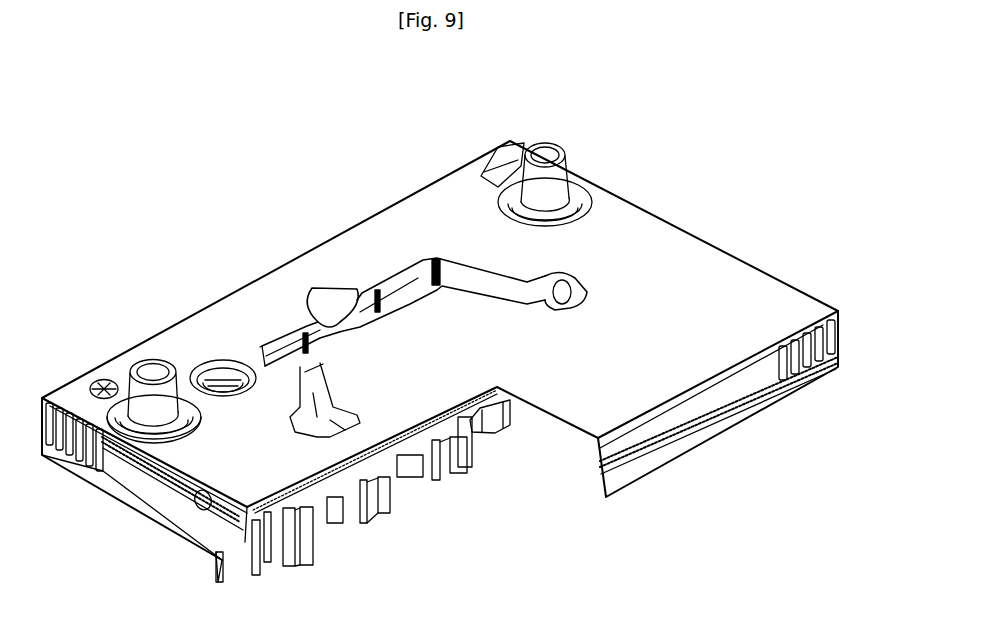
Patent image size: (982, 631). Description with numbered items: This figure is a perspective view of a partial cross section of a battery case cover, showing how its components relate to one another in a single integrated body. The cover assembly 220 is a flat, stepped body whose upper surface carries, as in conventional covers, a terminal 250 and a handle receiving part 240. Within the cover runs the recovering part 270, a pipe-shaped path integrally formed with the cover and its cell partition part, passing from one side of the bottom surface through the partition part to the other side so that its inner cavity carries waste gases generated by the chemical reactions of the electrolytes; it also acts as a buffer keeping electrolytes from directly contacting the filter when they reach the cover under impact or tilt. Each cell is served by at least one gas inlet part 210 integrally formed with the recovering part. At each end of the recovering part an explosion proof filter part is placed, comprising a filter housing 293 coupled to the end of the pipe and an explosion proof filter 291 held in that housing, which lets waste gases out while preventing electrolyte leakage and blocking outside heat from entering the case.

The connector housing 220 is at (697, 189).
The terminal 250 is at (548, 145).
The handle receiving part 240 is at (433, 263).
The recovering part 270 is at (500, 395).
The gas inlet part 210 is at (385, 498).
The explosion proof filter 291 is at (305, 510).
The filter housing 293 is at (217, 552).